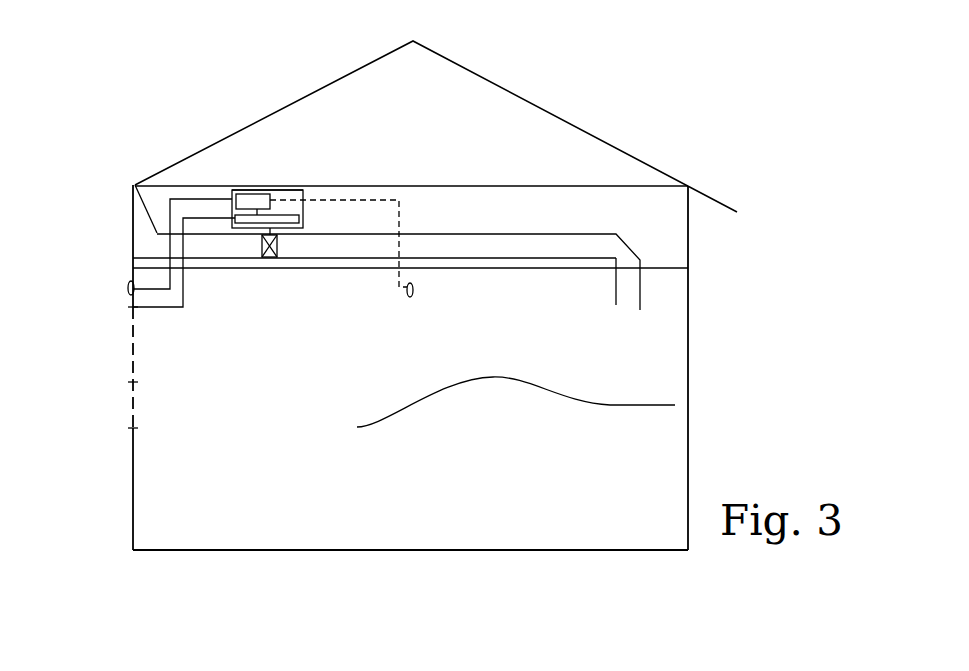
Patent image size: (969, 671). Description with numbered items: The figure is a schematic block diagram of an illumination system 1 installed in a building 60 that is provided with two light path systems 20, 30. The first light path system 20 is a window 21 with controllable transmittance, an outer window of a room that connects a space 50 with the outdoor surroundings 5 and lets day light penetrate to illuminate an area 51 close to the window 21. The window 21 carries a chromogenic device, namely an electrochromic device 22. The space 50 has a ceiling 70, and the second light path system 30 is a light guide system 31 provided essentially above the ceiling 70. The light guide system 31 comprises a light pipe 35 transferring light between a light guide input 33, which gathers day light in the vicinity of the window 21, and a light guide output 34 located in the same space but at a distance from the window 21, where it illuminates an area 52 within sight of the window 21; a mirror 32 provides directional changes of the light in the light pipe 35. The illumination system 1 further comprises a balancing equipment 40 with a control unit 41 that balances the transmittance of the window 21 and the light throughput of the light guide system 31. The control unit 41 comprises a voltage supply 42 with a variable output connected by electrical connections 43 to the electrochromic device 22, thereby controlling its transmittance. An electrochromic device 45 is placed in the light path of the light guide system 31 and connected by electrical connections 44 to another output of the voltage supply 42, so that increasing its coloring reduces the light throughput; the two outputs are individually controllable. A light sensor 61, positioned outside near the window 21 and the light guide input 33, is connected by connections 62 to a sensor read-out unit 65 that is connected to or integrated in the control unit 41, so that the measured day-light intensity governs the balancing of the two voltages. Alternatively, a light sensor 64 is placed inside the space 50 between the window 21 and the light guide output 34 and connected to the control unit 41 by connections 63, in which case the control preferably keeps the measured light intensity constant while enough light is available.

The illumination system 1 is at (653, 145).
The outdoor surroundings 5 is at (87, 162).
The light path system 20 is at (132, 422).
The window 21 is at (132, 382).
The electrochromic device 22 is at (132, 337).
The light path system 30 is at (510, 247).
The light guide system 31 is at (568, 240).
The mirror 32 is at (628, 247).
The light guide input 33 is at (143, 228).
The light guide output 34 is at (625, 300).
The light pipe 35 is at (363, 248).
The balancing equipment 40 is at (300, 192).
The control unit 41 is at (290, 190).
The voltage supply 42 is at (253, 228).
The electrical connections 43 is at (158, 308).
The electrical connections 44 is at (277, 233).
The electrochromic device 45 is at (270, 257).
The space 50 is at (675, 405).
The area 51 is at (160, 480).
The area 52 is at (660, 445).
The building 60 is at (540, 122).
The light sensor 61 is at (128, 288).
The connections 62 is at (170, 197).
The connections 63 is at (360, 200).
The light sensor 64 is at (413, 287).
The sensor read-out unit 65 is at (253, 194).
The ceiling 70 is at (572, 272).